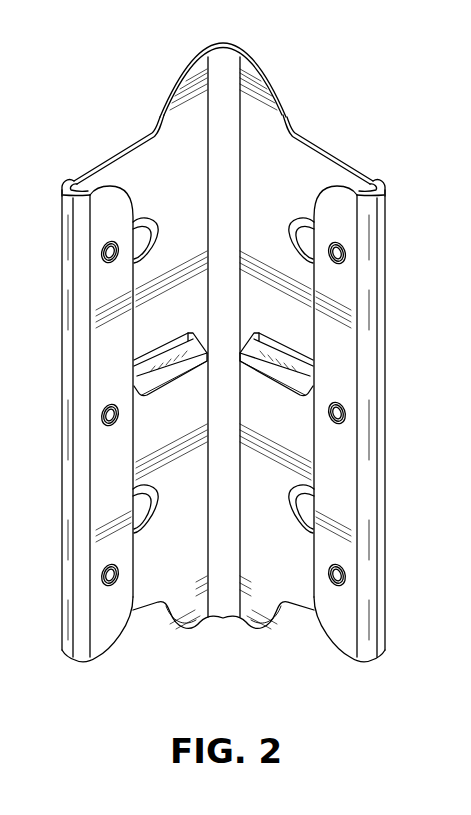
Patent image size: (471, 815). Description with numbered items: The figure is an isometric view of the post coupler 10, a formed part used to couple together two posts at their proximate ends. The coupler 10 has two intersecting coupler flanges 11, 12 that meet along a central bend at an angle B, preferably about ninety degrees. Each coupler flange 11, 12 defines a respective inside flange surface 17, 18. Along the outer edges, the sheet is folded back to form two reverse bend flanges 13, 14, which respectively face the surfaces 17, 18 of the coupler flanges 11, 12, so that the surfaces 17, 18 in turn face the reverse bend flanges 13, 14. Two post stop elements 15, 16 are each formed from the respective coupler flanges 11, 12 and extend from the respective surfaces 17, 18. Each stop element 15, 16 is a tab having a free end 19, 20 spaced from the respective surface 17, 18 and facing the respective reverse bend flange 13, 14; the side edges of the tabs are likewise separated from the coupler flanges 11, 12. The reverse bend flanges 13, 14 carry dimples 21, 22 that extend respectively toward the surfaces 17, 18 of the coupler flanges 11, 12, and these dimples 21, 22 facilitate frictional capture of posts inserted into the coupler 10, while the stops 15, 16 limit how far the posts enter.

The post coupler 10 is at (79, 77).
The angle B is at (222, 44).
The coupler flange 11 is at (128, 143).
The coupler flange 12 is at (320, 146).
The reverse bend flange 13 is at (90, 180).
The reverse bend flange 14 is at (356, 180).
The post stop element 15 is at (173, 360).
The post stop element 16 is at (275, 360).
The inside flange surface 17 is at (182, 189).
The inside flange surface 18 is at (286, 189).
The free end 19 is at (170, 383).
The free end 20 is at (277, 383).
The dimples 21 is at (100, 264).
The dimples 22 is at (345, 264).